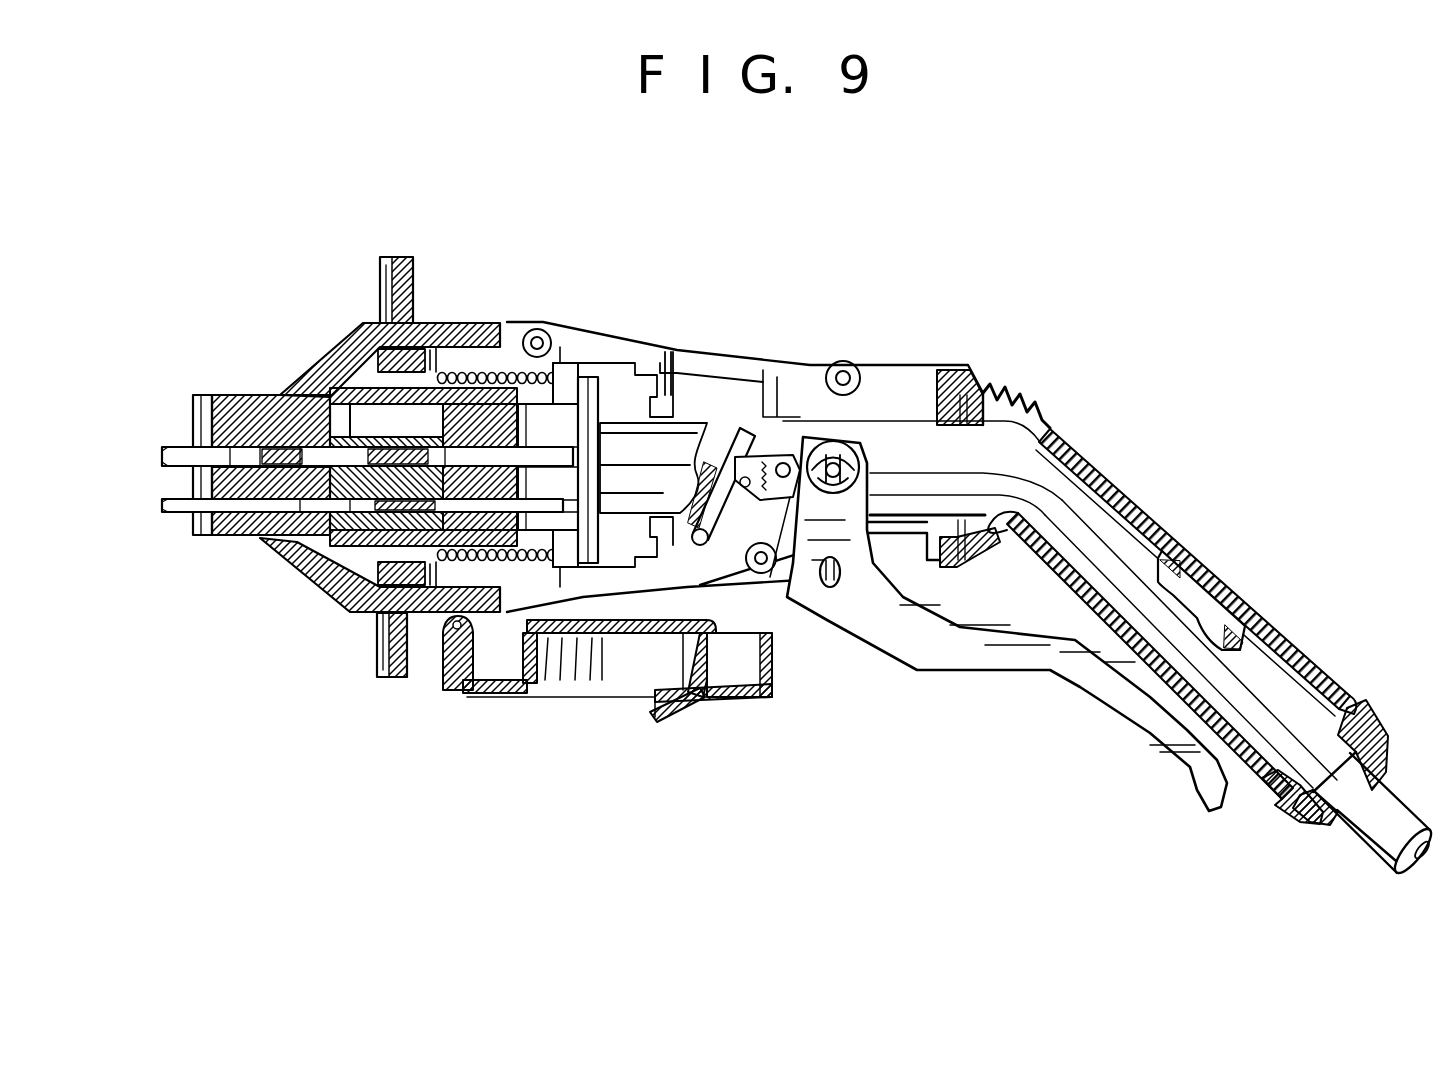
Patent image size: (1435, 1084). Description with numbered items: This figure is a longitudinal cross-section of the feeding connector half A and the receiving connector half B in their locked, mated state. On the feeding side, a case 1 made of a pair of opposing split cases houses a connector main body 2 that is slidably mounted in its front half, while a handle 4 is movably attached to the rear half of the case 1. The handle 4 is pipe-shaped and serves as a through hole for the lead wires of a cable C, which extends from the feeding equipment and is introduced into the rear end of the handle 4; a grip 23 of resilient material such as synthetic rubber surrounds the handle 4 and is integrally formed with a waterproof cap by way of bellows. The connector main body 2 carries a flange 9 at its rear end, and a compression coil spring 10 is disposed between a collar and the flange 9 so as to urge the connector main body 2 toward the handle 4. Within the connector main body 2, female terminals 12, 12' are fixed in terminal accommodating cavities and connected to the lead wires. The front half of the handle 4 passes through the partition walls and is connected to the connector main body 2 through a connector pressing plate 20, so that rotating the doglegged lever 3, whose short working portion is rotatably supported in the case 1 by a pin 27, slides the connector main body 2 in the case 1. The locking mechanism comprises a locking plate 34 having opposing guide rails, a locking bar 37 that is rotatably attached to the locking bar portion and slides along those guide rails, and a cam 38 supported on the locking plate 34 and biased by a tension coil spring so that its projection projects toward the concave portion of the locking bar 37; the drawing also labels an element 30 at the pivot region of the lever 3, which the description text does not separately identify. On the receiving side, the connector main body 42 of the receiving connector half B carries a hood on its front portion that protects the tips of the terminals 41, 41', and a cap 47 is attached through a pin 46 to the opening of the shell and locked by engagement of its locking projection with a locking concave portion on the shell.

The case 1 is at (770, 425).
The connector main body 2 is at (505, 378).
The lever 3 is at (965, 672).
The handle 4 is at (1100, 520).
The flange 9 is at (588, 372).
The compression coil spring 10 is at (472, 370).
The female terminal 12 is at (356, 311).
The female terminal 12' is at (353, 645).
The connector pressing plate 20 is at (600, 410).
The grip 23 is at (1248, 560).
The pin 27 is at (830, 588).
The pivot 30 is at (845, 452).
The locking plate 34 is at (790, 432).
The locking bar 37 is at (746, 432).
The cam 38 is at (752, 548).
The female terminal 41 is at (271, 394).
The female terminal 41' is at (271, 541).
The connector main body 42 is at (238, 545).
The pin 46 is at (453, 623).
The cap 47 is at (597, 700).
The feeding connector half A is at (830, 305).
The receiving connector half B is at (222, 371).
The cable C is at (1355, 828).